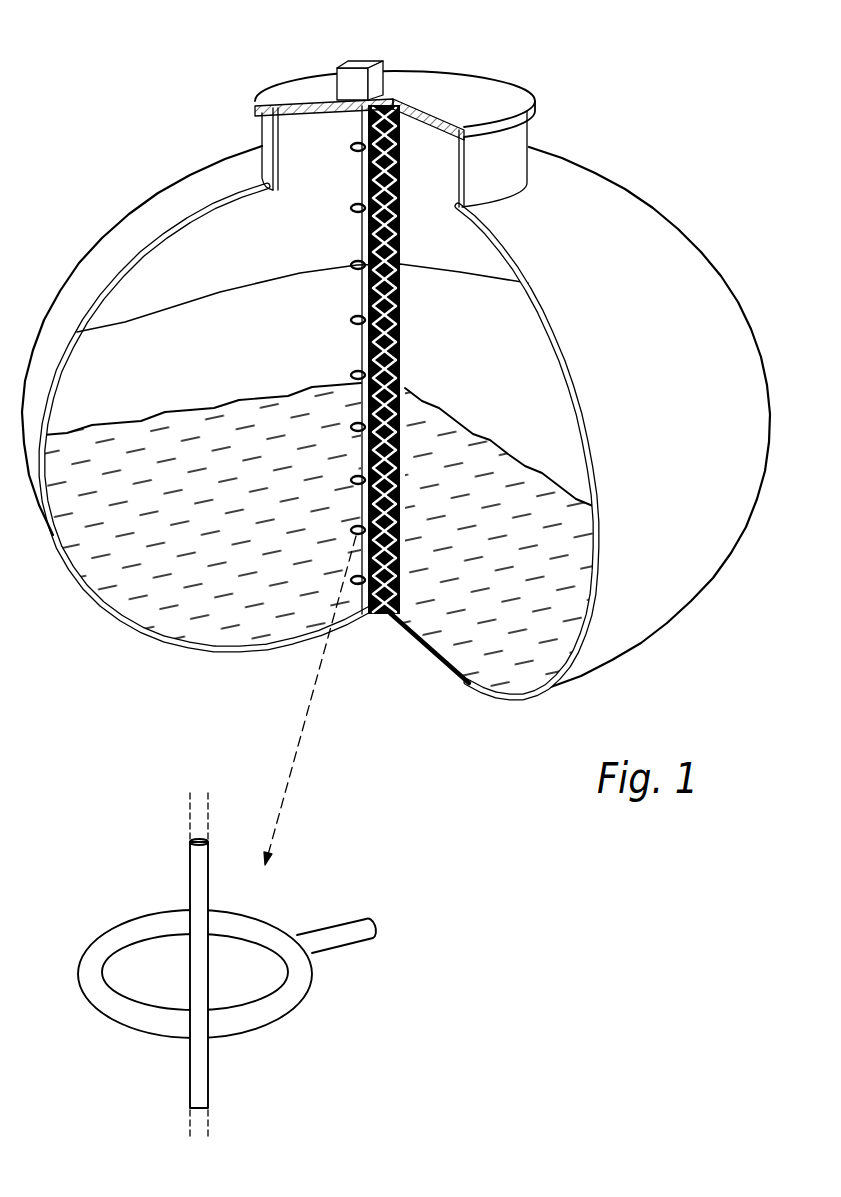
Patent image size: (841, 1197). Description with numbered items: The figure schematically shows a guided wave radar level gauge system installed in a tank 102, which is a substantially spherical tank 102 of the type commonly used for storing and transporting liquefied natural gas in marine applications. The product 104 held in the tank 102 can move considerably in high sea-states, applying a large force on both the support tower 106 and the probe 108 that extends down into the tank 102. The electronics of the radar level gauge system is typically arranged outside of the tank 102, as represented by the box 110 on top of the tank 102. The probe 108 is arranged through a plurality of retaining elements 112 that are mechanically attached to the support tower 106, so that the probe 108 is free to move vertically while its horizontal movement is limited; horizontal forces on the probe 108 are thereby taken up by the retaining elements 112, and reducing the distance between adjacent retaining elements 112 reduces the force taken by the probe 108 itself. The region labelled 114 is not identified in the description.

The tank 102 is at (652, 223).
The product 104 is at (147, 590).
The support tower 106 is at (403, 333).
The probe 108 is at (358, 237).
The box 110 is at (350, 61).
The retaining elements 112 is at (358, 322).
The inner tank wall 114 is at (103, 363).